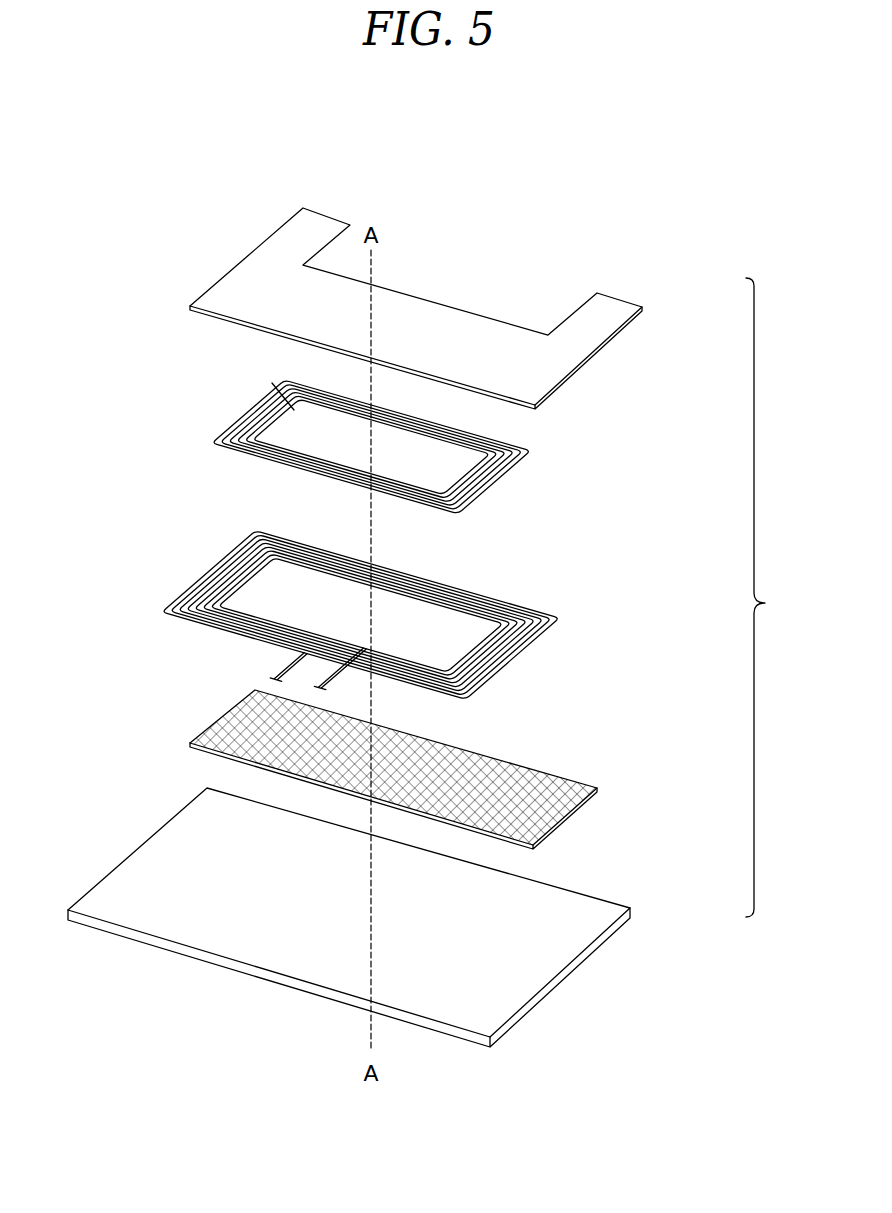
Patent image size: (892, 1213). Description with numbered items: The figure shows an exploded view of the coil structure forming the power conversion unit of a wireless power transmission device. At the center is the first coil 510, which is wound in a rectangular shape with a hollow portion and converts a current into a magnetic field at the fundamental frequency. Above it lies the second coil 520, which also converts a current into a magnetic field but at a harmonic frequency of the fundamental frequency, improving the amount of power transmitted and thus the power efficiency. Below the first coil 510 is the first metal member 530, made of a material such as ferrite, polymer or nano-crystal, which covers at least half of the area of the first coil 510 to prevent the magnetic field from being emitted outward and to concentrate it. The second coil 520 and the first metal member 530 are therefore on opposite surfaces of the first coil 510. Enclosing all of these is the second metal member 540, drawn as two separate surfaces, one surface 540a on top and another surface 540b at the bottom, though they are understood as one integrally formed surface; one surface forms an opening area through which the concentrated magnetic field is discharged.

The first coil 510 is at (547, 609).
The second coil 520 is at (510, 476).
The first metal member 530 is at (567, 777).
The second metal member 540 is at (774, 597).
The one surface of the second metal member 540a is at (637, 309).
The another surface of the second metal member 540b is at (580, 912).